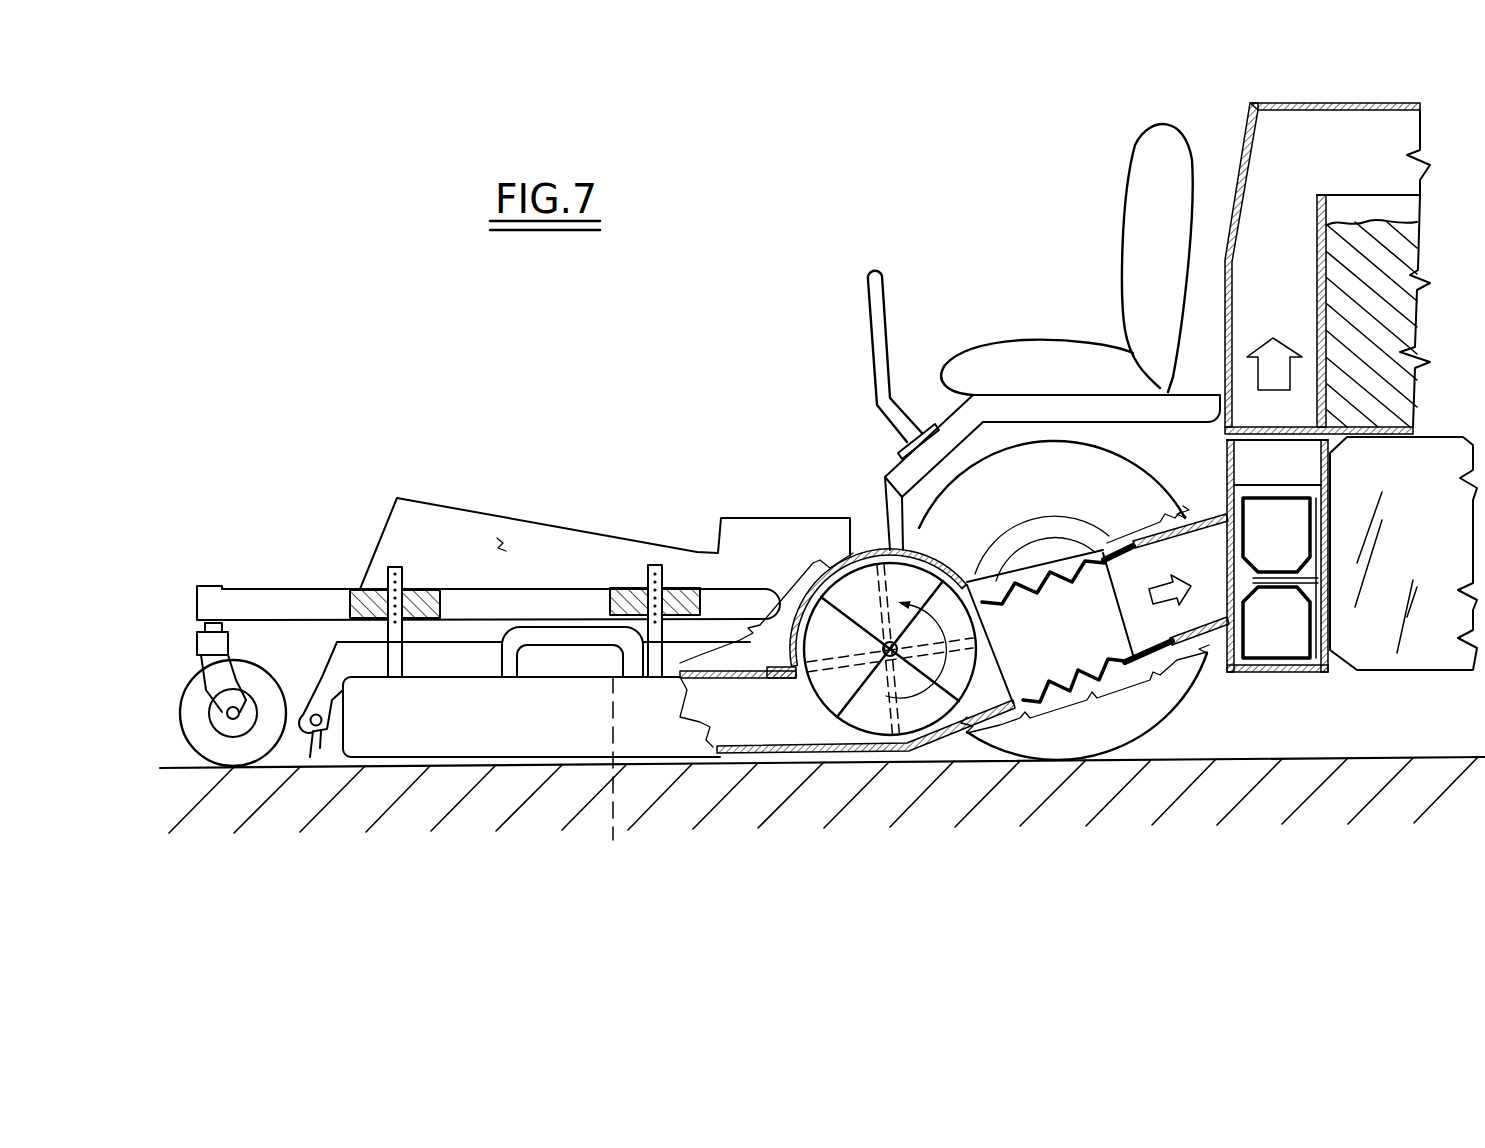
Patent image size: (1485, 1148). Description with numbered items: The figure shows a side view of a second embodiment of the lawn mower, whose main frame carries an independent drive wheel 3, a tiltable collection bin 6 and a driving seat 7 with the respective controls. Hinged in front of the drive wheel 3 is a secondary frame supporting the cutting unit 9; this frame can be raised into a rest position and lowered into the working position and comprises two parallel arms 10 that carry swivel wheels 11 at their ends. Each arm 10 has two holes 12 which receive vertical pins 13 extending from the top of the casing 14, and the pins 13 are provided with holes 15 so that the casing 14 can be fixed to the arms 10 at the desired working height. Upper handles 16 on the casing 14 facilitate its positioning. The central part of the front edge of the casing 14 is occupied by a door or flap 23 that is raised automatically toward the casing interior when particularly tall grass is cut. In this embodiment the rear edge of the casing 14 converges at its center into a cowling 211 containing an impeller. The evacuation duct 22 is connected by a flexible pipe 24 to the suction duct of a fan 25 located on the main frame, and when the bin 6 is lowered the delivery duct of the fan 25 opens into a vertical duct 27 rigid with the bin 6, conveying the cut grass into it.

The drive wheel 3 is at (1105, 745).
The collection bin 6 is at (1398, 397).
The driving seat 7 is at (1040, 330).
The cutting unit 9 is at (448, 695).
The arm 10 is at (267, 589).
The swivel wheel 11 is at (192, 688).
The hole 12 is at (408, 589).
The vertical pin 13 is at (389, 570).
The casing 14 is at (563, 734).
The hole 15 is at (656, 568).
The upper handle 16 is at (544, 630).
The evacuation duct 22 is at (903, 735).
The door or flap 23 is at (318, 745).
The flexible pipe 24 is at (1120, 662).
The fan 25 is at (1282, 650).
The vertical duct 27 is at (1295, 268).
The cowling 211 is at (876, 550).